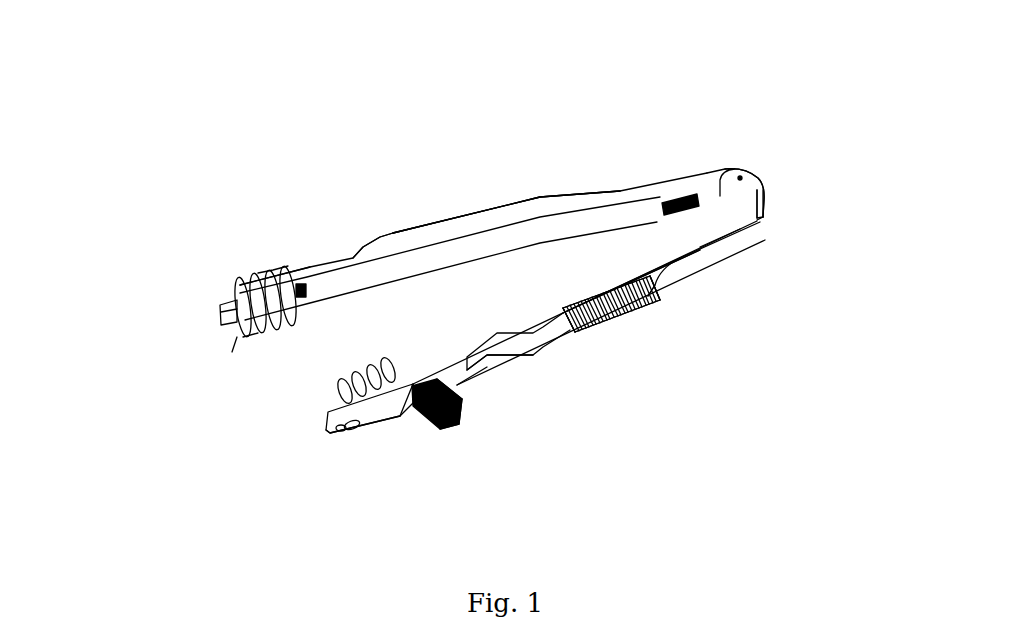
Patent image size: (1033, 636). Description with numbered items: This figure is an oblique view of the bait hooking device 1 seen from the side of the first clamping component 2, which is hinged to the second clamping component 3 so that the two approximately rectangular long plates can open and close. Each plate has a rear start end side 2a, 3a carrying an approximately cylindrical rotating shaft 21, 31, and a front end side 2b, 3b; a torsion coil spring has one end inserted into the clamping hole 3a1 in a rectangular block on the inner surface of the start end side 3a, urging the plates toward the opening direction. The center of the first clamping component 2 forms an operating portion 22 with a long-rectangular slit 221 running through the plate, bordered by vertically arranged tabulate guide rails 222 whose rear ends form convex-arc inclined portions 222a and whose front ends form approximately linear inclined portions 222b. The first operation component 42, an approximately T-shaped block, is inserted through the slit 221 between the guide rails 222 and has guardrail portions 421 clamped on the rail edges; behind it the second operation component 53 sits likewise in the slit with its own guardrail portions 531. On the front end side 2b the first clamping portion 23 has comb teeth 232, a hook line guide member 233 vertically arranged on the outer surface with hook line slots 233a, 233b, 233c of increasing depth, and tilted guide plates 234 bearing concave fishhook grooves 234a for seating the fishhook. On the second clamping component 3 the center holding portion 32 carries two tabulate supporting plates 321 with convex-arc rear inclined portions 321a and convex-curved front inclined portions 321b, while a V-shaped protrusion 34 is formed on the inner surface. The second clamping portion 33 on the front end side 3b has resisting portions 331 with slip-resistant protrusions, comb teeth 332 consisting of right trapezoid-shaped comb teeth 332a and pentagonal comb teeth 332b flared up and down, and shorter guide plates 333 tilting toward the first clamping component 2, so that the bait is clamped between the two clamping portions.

The bait hooking device 1 is at (185, 137).
The first clamping component 2 is at (748, 222).
The start end side of first clamping component 2a is at (733, 237).
The front end side of first clamping component 2b is at (373, 458).
The rotating shaft 21 is at (752, 167).
The operating portion 22 is at (657, 363).
The slit 221 is at (487, 367).
The guide rails 222 is at (537, 342).
The inclined portions 222a is at (667, 273).
The inclined portions 222b is at (510, 362).
The first clamping portion 23 is at (335, 460).
The comb teeth 232 is at (337, 383).
The hook line guide member 233 is at (443, 430).
The hook line slot 233a is at (457, 420).
The hook line slot 233b is at (457, 423).
The hook line slot 233c is at (460, 425).
The guide plates 234 is at (327, 432).
The fishhook grooves 234a is at (327, 413).
The second clamping component 3 is at (685, 175).
The start end side of second clamping component 3a is at (733, 167).
The clamping hole 3a1 is at (667, 207).
The front end side of second clamping component 3b is at (210, 260).
The rotating shaft 31 is at (760, 195).
The holding portion 32 is at (377, 190).
The supporting plates 321 is at (537, 197).
The inclined portions 321a is at (593, 190).
The inclined portions 321b is at (367, 243).
The second clamping portion 33 is at (207, 277).
The resisting portions 331 is at (233, 310).
The comb teeth 332 is at (265, 301).
The comb teeth 332a is at (267, 270).
The comb teeth 332b is at (233, 290).
The guide plates 333 is at (220, 305).
The V-shaped protrusion 34 is at (301, 286).
The first operation component 42 is at (597, 317).
The guardrail portions 421 is at (577, 310).
The second operation component 53 is at (630, 310).
The guardrail portions 531 is at (610, 293).